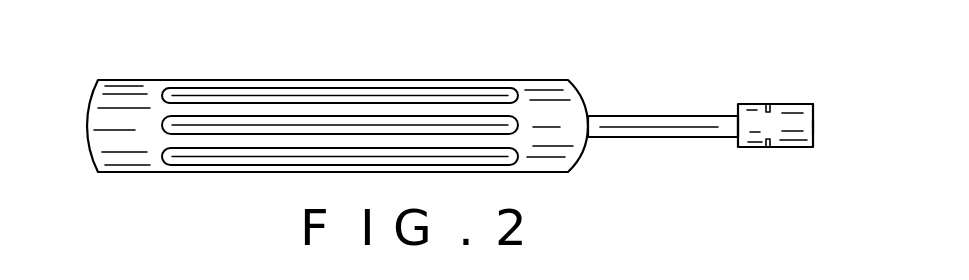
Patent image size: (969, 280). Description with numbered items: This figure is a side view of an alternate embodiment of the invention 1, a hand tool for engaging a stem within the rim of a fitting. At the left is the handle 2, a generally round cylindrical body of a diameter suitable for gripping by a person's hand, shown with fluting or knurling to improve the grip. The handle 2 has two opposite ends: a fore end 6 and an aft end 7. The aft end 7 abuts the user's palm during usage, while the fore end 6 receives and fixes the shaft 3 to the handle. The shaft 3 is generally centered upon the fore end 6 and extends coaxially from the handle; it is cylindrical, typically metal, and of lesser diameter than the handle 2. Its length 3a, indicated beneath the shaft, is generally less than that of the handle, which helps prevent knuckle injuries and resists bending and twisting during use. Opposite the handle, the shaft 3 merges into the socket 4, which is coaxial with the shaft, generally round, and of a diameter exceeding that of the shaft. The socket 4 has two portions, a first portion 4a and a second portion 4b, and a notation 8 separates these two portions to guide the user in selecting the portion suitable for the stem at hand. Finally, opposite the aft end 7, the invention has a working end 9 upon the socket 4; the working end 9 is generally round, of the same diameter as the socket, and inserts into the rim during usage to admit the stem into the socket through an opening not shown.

The invention 1 is at (278, 64).
The handle 2 is at (365, 80).
The shaft 3 is at (645, 115).
The length of the shaft 3a is at (597, 151).
The socket 4 is at (778, 73).
The first portion 4a is at (797, 103).
The second portion 4b is at (753, 103).
The fore end 6 is at (583, 95).
The aft end 7 is at (87, 138).
The notation 8 is at (768, 149).
The working end 9 is at (813, 127).